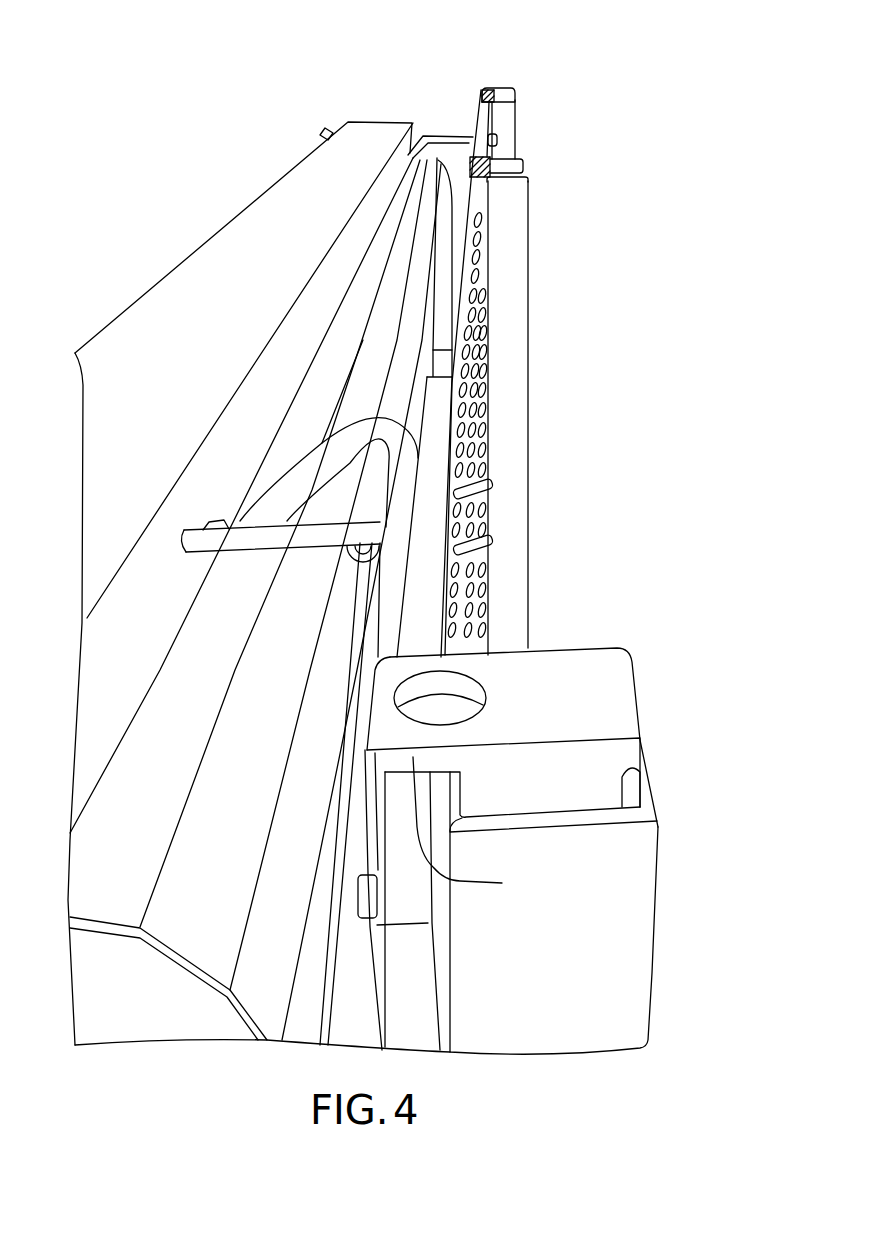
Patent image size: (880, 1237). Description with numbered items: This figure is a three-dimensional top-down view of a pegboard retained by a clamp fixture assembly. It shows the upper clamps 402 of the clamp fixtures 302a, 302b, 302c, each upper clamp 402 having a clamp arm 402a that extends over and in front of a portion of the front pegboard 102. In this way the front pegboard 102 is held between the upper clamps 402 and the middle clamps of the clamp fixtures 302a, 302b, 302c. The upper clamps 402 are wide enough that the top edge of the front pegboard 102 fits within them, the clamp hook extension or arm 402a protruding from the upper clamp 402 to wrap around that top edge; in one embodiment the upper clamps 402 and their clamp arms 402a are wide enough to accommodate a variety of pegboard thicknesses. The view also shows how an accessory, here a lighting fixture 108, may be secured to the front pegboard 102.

The front pegboard 102 is at (423, 622).
The lighting fixture 108 is at (368, 121).
The clamp fixture 302a is at (660, 903).
The clamp fixture 302b is at (520, 117).
The clamp fixture 302c is at (528, 357).
The upper clamp 402 is at (497, 89).
The clamp arm 402a is at (483, 93).